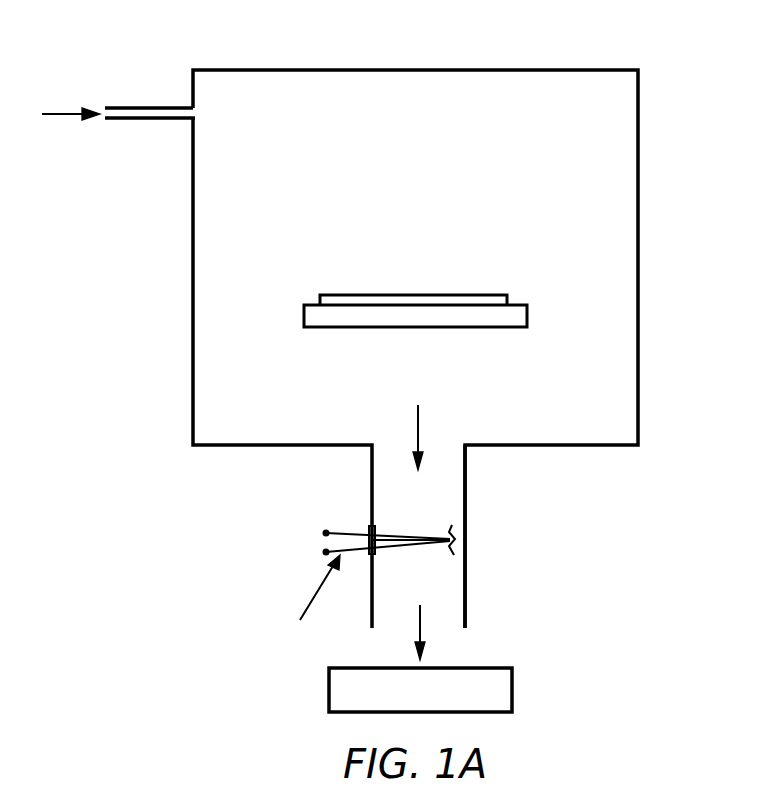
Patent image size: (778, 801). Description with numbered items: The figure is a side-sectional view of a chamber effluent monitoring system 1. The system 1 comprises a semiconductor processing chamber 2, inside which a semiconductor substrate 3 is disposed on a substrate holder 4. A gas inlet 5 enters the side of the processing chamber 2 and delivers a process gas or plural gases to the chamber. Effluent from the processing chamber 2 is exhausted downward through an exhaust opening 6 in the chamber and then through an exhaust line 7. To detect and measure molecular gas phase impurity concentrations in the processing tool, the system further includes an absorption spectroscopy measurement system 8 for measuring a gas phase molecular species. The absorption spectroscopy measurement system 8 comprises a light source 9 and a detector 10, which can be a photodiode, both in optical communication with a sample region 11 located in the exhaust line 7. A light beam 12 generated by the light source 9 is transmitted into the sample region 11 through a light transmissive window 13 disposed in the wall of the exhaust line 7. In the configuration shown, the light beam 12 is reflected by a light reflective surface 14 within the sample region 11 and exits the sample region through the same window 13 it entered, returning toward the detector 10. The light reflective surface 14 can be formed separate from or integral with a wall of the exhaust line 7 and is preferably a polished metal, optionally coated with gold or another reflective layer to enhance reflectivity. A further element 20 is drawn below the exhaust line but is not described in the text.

The processing apparatus 1 is at (448, 62).
The chamber 2 is at (600, 70).
The substrate 3 is at (508, 300).
The stage 4 is at (528, 312).
The gas inlet 5 is at (100, 108).
The gas flow 6 is at (441, 447).
The exhaust nozzle 7 is at (467, 483).
The light source direction 8 is at (313, 603).
The light source 9 is at (326, 552).
The light source 10 is at (326, 533).
The beam path 11 is at (407, 525).
The beam path 12 is at (412, 545).
The window 13 is at (369, 530).
The detector 14 is at (451, 556).
The analyzer 20 is at (436, 702).